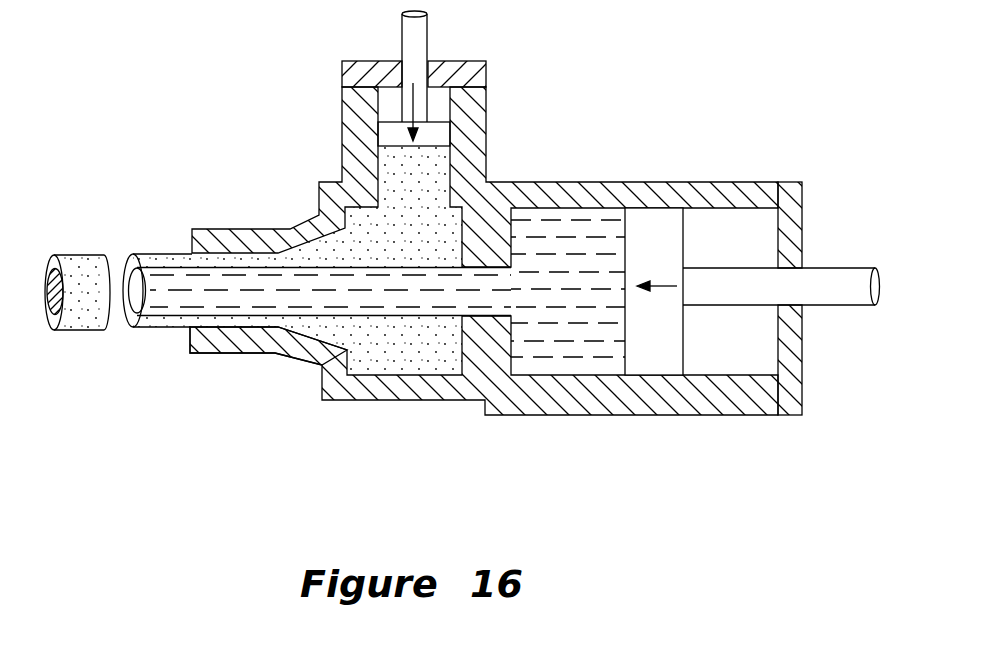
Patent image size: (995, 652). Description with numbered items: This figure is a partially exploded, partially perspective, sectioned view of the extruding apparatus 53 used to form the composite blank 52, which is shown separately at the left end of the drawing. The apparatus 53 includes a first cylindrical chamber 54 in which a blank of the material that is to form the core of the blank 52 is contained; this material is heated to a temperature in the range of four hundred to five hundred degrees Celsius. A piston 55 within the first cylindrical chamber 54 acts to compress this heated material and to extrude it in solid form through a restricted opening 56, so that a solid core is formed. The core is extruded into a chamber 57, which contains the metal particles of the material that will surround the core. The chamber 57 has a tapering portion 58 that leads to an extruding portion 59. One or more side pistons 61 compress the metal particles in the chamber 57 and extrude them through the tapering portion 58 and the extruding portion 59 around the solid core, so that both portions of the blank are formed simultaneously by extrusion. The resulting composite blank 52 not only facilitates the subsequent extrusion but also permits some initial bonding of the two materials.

The blank 52 is at (80, 243).
The extruding apparatus 53 is at (590, 118).
The first cylindrical chamber 54 is at (567, 378).
The piston 55 is at (658, 237).
The restricted opening 56 is at (477, 316).
The chamber 57 is at (370, 374).
The tapering portion 58 is at (305, 340).
The extruding portion 59 is at (217, 336).
The side piston 61 is at (435, 135).